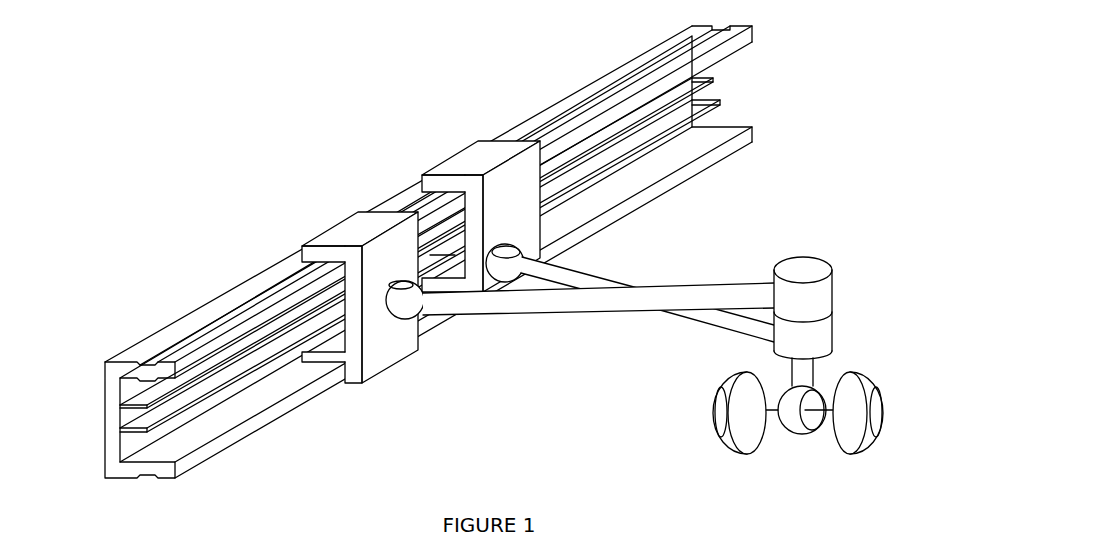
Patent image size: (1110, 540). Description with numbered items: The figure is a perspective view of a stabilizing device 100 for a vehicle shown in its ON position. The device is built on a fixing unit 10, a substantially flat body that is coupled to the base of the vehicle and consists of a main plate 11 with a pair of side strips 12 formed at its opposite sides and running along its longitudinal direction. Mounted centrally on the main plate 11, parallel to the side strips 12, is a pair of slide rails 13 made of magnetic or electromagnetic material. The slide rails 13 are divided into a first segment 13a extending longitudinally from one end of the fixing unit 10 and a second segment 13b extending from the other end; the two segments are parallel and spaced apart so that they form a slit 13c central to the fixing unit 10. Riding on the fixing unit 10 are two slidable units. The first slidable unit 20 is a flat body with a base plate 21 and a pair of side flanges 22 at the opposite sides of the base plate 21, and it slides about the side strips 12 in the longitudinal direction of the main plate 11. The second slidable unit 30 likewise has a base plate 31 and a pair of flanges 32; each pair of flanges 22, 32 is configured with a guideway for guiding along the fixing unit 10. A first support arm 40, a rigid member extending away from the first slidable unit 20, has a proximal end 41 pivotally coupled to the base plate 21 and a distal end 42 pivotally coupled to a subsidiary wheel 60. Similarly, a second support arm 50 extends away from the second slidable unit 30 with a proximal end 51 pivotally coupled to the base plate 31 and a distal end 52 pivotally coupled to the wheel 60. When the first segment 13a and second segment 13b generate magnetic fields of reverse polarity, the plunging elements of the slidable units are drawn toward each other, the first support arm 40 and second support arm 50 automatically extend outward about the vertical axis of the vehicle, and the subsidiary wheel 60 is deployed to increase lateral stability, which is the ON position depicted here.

The stabilizing device 100 is at (459, 283).
The fixing unit 10 is at (383, 283).
The main plate 11 is at (113, 417).
The side strips 12 is at (162, 370).
The slide rails 13 is at (438, 286).
The first segment 13a is at (201, 403).
The second segment 13b is at (715, 108).
The slit 13c is at (427, 247).
The first slidable unit 20 is at (334, 311).
The base plate 21 is at (375, 318).
The side flanges 22 is at (327, 250).
The second slidable unit 30 is at (492, 171).
The base plate 31 is at (510, 205).
The flanges 32 is at (465, 160).
The first support arm 40 is at (555, 308).
The proximal end 41 is at (425, 308).
The distal end 42 is at (753, 292).
The second support arm 50 is at (647, 308).
The proximal end 51 is at (527, 263).
The distal end 52 is at (753, 328).
The subsidiary wheel 60 is at (807, 403).